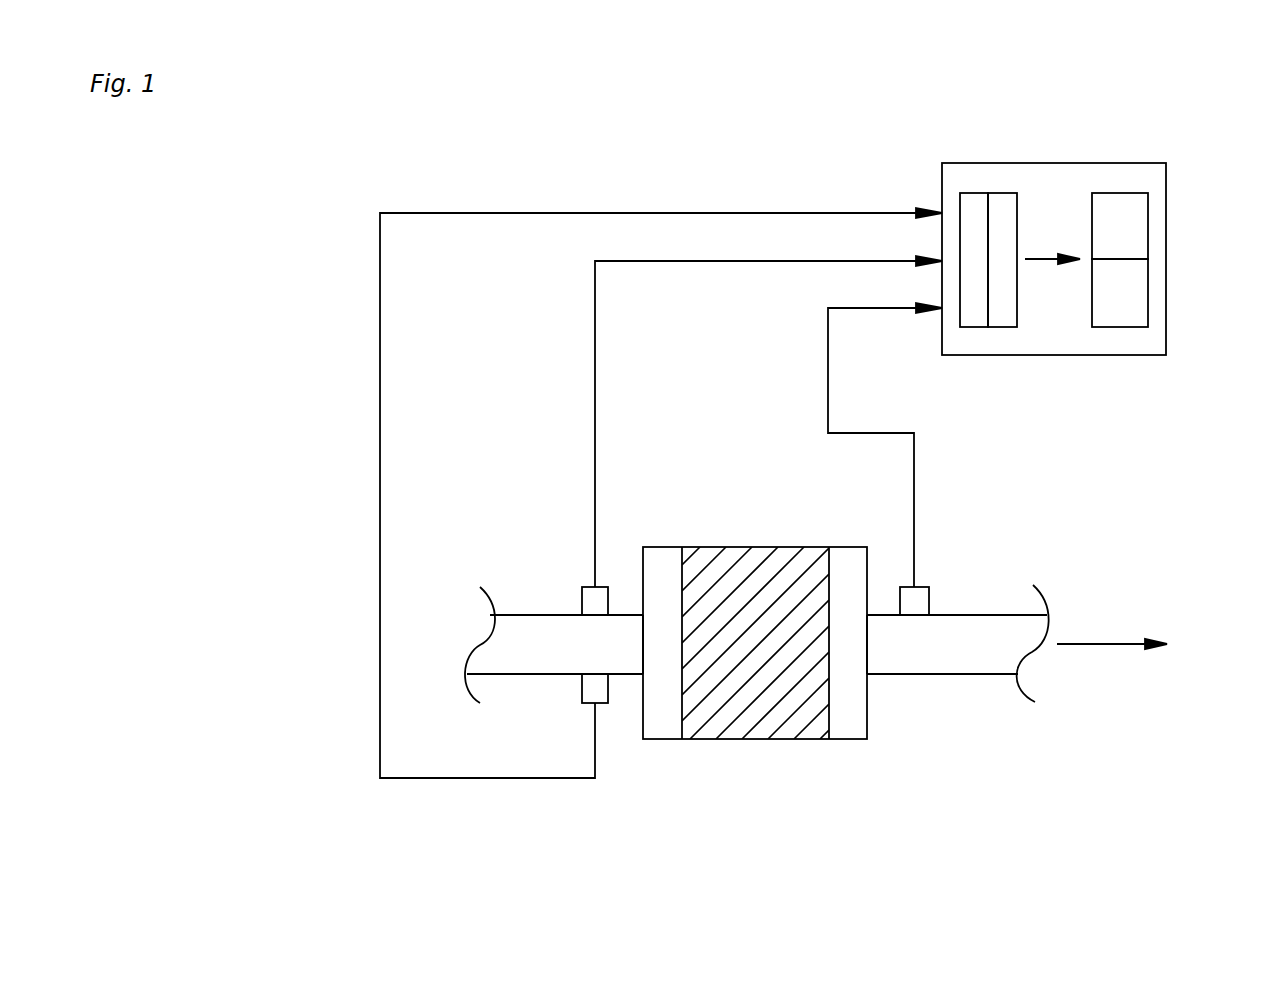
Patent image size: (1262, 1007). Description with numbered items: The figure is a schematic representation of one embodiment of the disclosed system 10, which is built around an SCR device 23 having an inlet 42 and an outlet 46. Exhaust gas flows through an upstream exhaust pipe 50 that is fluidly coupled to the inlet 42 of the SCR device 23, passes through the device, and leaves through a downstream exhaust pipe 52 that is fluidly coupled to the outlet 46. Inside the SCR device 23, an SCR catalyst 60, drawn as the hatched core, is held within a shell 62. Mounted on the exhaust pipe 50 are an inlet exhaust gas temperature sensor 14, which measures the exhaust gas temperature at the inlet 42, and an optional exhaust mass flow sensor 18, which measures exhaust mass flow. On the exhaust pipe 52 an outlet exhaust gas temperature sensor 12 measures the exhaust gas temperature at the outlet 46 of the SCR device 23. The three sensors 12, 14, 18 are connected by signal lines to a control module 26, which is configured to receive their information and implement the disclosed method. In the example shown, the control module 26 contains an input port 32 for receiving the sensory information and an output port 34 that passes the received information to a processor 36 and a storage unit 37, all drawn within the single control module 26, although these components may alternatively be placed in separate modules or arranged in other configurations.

The system 10 is at (878, 852).
The outlet exhaust gas temperature sensor 12 is at (932, 588).
The inlet exhaust gas temperature sensor 14 is at (580, 610).
The exhaust mass flow sensor 18 is at (582, 690).
The SCR device 23 is at (763, 653).
The control module 26 is at (1069, 273).
The input port 32 is at (975, 193).
The output port 34 is at (1003, 193).
The processor 36 is at (1148, 220).
The storage unit 37 is at (1148, 295).
The inlet 42 is at (630, 697).
The outlet 46 is at (880, 697).
The exhaust pipe 50 is at (515, 615).
The exhaust pipe 52 is at (998, 615).
The SCR catalyst 60 is at (783, 723).
The shell 62 is at (665, 557).